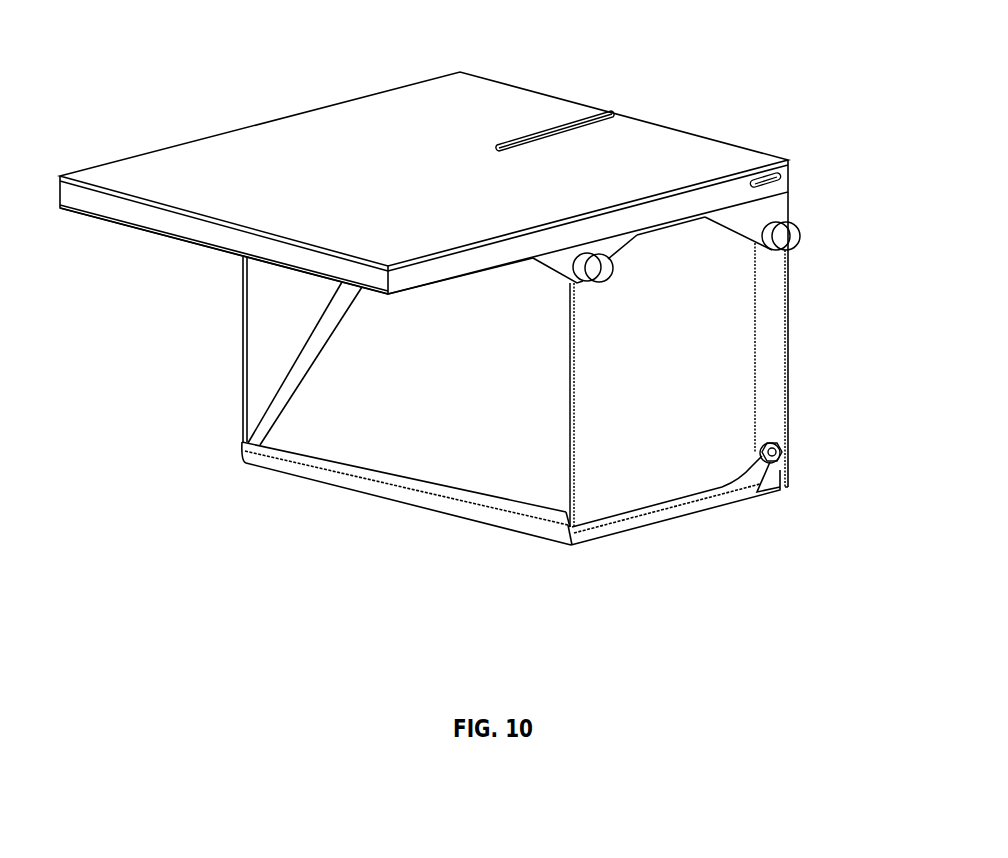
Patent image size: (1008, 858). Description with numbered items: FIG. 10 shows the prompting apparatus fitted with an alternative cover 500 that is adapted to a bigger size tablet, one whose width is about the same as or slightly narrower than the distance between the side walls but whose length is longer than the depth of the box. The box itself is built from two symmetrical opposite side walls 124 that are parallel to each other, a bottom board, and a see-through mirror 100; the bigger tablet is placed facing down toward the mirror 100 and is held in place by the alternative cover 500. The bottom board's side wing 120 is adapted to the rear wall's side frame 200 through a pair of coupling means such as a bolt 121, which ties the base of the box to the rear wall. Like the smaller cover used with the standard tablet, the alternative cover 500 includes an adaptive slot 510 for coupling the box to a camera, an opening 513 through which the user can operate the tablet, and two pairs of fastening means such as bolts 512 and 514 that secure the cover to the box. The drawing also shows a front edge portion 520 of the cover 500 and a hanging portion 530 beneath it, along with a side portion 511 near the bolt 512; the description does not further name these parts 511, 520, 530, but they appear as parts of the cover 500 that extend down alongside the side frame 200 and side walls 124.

The see-through mirror 100 is at (408, 442).
The side wing 120 is at (698, 498).
The bolt 121 is at (780, 458).
The side wall 124 is at (730, 357).
The side frame 200 is at (770, 307).
The alternative cover 500 is at (493, 107).
The adaptive slot 510 is at (583, 125).
The side hanging plate 511 is at (775, 202).
The bolt 512 is at (787, 237).
The opening 513 is at (775, 180).
The bolt 514 is at (593, 270).
The front edge 520 is at (175, 223).
The support plate 530 is at (463, 263).